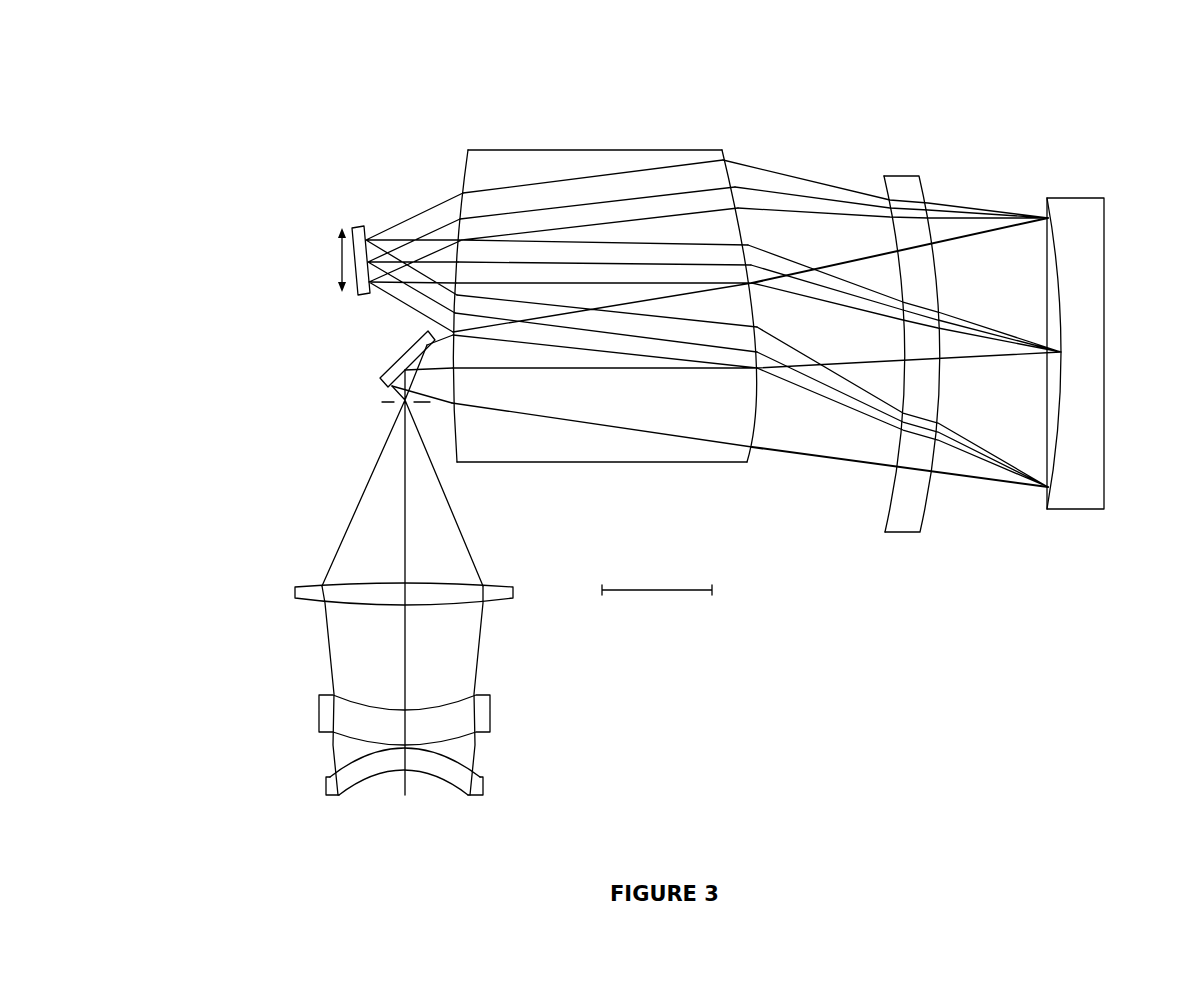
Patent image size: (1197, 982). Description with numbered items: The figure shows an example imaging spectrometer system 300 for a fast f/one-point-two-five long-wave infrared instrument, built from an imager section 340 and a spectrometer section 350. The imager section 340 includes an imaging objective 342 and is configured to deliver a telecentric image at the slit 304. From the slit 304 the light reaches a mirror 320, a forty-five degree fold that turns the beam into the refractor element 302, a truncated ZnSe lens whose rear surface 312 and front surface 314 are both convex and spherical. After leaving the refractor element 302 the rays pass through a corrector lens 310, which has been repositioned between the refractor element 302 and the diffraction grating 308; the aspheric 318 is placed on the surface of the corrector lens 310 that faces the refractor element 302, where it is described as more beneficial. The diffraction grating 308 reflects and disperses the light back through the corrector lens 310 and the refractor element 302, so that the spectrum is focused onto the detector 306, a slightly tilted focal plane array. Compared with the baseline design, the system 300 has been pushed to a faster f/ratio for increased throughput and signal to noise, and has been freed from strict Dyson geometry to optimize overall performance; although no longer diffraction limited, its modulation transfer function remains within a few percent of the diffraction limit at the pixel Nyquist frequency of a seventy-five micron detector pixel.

The imaging spectrometer system 300 is at (705, 74).
The refractor element 302 is at (567, 148).
The slit 304 is at (385, 405).
The detector 306 is at (355, 222).
The diffraction grating 308 is at (1055, 452).
The corrector lens 310 is at (901, 174).
The rear surface 312 is at (463, 180).
The front surface 314 is at (723, 153).
The aspheric 318 is at (890, 478).
The mirror 320 is at (408, 350).
The imager section 340 is at (278, 521).
The imaging objective 342 is at (567, 660).
The spectrometer section 350 is at (305, 152).